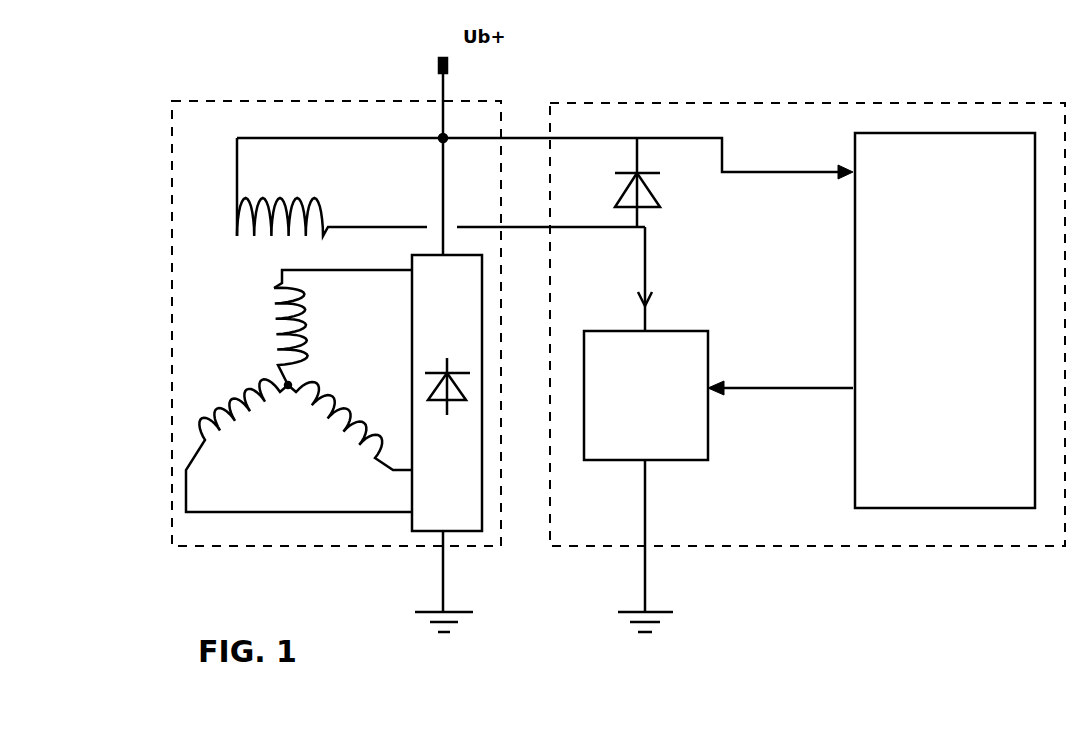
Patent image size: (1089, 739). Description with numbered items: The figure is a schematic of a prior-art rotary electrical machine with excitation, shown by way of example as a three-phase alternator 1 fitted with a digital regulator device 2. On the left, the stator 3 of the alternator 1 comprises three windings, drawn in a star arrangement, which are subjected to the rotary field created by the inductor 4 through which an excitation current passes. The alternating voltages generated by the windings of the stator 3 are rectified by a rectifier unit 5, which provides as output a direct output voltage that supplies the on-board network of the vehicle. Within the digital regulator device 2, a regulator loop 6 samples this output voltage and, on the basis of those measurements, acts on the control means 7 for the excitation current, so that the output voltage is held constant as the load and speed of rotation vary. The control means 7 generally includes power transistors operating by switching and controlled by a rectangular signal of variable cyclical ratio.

The three-phase alternator 1 is at (237, 99).
The digital regulator device 2 is at (880, 101).
The stator 3 is at (224, 393).
The inductor 4 is at (245, 238).
The rectifier unit 5 is at (468, 533).
The regulator loop 6 is at (982, 512).
The control means 7 is at (703, 465).